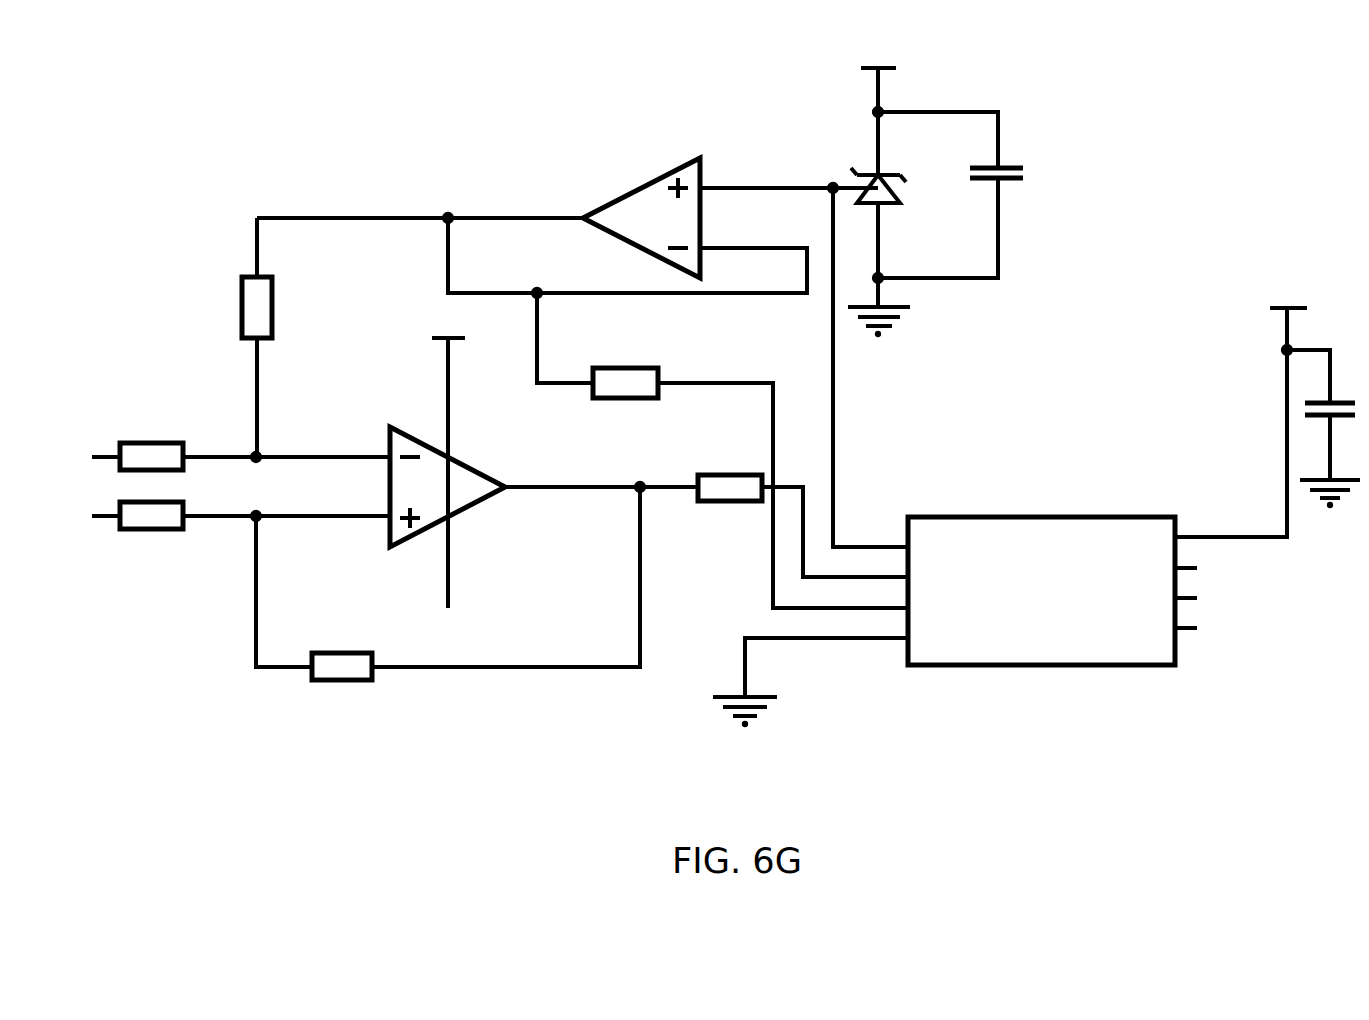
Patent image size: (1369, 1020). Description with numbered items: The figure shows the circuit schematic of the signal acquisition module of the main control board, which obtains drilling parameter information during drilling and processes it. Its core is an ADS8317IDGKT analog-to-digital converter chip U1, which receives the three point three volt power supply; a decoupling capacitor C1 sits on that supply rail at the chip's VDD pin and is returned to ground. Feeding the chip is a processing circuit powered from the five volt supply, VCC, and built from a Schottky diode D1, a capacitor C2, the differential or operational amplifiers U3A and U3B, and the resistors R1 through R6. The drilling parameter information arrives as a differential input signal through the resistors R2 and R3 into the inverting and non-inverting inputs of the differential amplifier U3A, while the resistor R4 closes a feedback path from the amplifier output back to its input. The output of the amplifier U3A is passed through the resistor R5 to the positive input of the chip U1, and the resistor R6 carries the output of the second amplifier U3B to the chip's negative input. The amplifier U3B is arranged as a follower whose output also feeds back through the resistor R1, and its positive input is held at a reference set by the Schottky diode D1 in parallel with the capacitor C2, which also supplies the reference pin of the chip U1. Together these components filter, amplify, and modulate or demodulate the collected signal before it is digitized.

The resistor R1 is at (345, 337).
The resistor R2 is at (241, 444).
The resistor R3 is at (241, 503).
The resistor R4 is at (448, 583).
The resistor R5 is at (772, 513).
The resistor R6 is at (720, 448).
The differential amplifier U3A is at (497, 464).
The operational amplifier U3B is at (641, 225).
The Schottky diode D1 is at (890, 205).
The capacitor C2 is at (956, 195).
The analog-to-digital converter ADS8317IDGKT U1 is at (961, 470).
The decoupling capacitor C C1 is at (1283, 410).